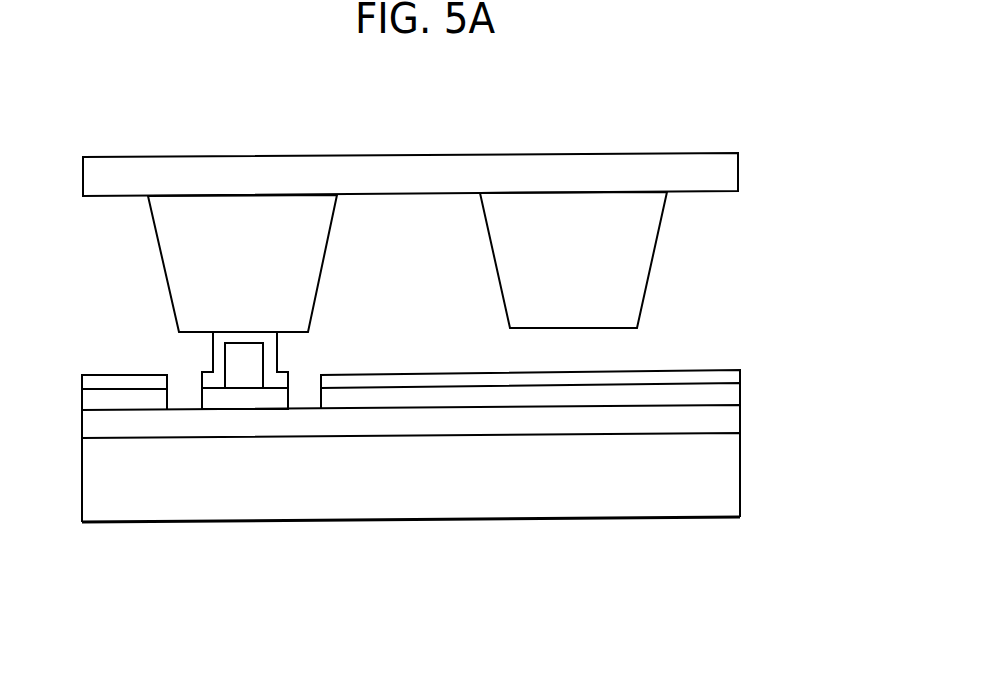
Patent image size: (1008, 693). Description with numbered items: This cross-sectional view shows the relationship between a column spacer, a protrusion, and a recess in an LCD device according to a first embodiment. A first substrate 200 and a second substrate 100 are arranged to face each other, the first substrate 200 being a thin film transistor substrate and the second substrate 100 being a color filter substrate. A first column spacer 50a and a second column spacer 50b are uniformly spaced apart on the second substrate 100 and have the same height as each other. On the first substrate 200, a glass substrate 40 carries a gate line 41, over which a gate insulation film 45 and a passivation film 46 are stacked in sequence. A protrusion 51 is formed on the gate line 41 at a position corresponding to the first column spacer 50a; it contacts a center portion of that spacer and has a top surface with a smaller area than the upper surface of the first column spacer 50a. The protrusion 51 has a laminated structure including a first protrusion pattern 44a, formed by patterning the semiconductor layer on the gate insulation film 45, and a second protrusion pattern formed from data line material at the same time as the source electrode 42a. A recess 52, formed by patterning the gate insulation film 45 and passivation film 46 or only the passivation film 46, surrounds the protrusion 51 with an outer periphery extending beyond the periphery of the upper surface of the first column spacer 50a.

The second substrate 100 is at (733, 171).
The first column spacer 50a is at (318, 257).
The second column spacer 50b is at (645, 255).
The recess 52 is at (194, 388).
The protrusion 51 is at (249, 490).
The first protrusion pattern 44a is at (248, 380).
The source electrode 42a is at (242, 356).
The first substrate 200 is at (478, 440).
The passivation film 46 is at (740, 371).
The gate insulation film 45 is at (740, 393).
The gate line 41 is at (740, 418).
The glass substrate 40 is at (443, 477).